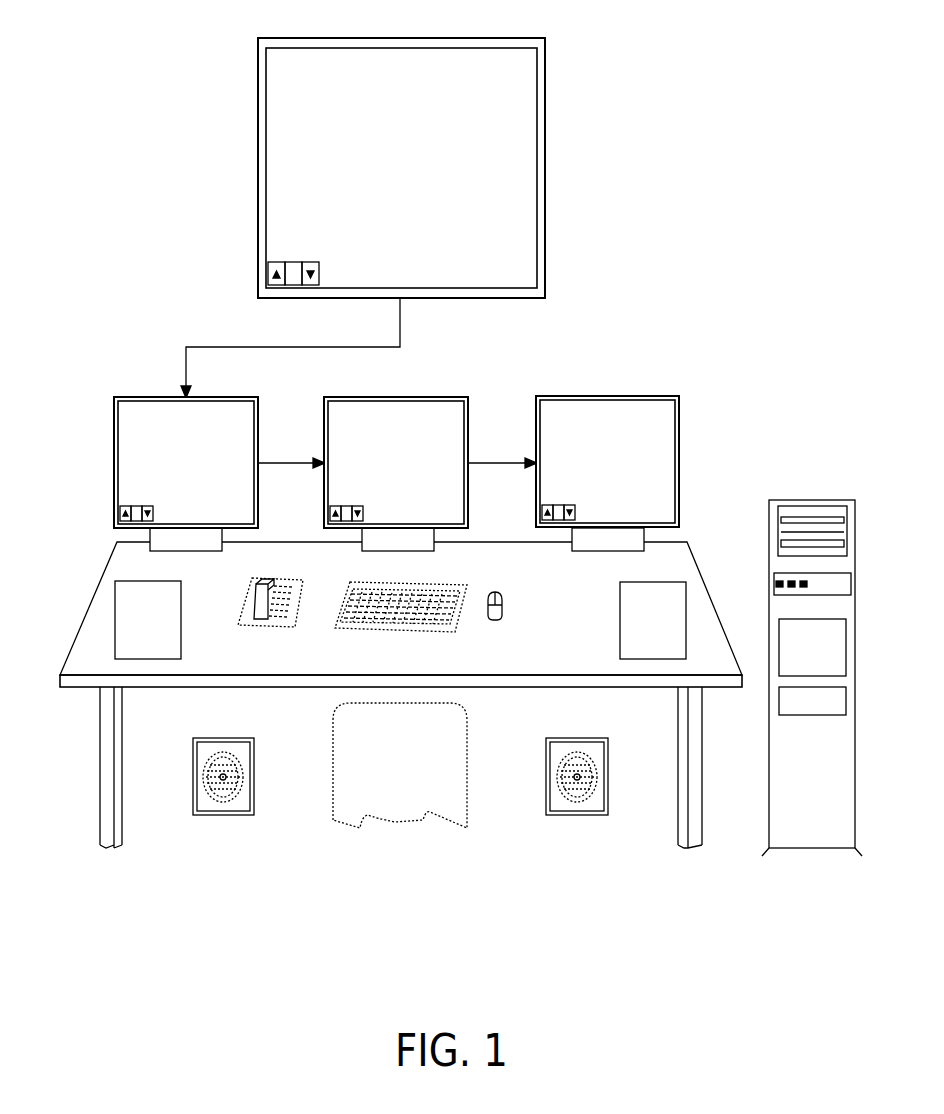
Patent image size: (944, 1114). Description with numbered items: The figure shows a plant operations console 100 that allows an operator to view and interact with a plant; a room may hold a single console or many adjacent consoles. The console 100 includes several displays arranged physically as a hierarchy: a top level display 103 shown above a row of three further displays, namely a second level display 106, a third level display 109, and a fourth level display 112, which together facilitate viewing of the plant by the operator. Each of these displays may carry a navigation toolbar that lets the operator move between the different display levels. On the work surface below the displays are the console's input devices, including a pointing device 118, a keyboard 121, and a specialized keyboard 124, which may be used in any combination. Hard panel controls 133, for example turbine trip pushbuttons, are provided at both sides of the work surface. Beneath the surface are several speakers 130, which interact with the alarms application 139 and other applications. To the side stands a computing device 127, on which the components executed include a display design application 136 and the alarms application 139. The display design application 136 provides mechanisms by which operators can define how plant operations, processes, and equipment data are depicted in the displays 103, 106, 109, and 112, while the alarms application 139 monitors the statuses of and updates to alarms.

The plant operations console 100 is at (461, 512).
The top level display 103 is at (534, 162).
The second level display 106 is at (145, 402).
The third level display 109 is at (468, 418).
The fourth level display 112 is at (679, 436).
The pointing device 118 is at (502, 614).
The keyboard 121 is at (420, 623).
The specialized keyboard 124 is at (290, 618).
The computing device 127 is at (793, 678).
The speakers 130 is at (193, 765).
The hard panel controls 133 is at (122, 586).
The display design application 136 is at (779, 644).
The alarms application 139 is at (800, 716).